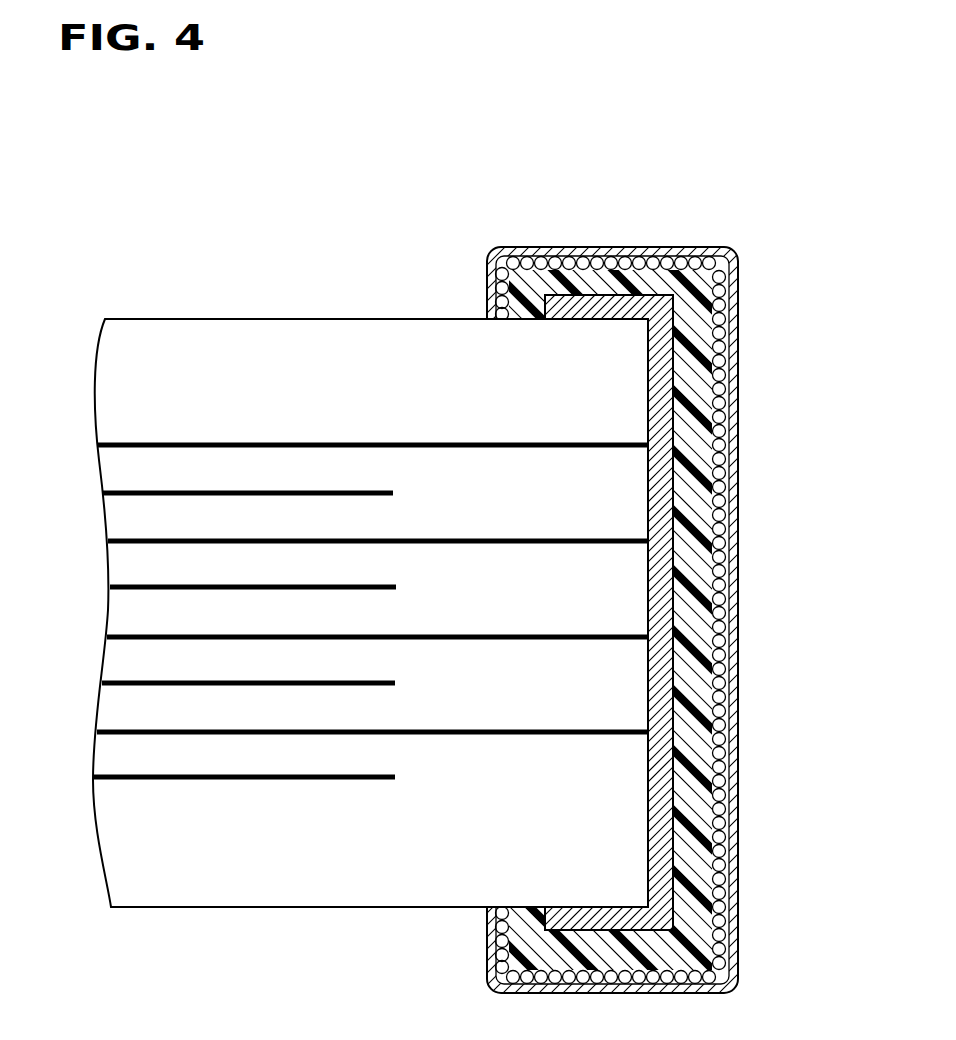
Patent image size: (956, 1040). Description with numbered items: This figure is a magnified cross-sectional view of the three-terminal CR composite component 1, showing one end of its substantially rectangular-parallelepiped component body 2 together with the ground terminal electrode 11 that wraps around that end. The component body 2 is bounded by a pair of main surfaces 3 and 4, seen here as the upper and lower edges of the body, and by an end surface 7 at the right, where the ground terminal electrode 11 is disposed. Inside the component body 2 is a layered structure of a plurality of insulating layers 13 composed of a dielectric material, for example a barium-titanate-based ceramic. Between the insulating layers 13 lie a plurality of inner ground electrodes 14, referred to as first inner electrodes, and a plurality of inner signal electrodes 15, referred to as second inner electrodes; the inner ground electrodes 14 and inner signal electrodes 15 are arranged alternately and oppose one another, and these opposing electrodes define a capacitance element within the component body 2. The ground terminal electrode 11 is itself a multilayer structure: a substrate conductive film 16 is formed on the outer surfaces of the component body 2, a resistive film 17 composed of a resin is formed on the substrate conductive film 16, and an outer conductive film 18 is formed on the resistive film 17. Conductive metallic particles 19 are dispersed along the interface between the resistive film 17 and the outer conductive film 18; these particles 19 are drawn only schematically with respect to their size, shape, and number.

The three-terminal CR composite component 1 is at (58, 170).
The component body 2 is at (100, 312).
The main surface 3 is at (197, 318).
The main surface 4 is at (298, 907).
The end surface 7 is at (650, 510).
The ground terminal electrode 11 is at (748, 260).
The insulating layers 13 is at (289, 517).
The inner ground electrodes 14 is at (424, 540).
The inner signal electrodes 15 is at (243, 683).
The substrate conductive film 16 is at (662, 607).
The resistive film 17 is at (693, 676).
The outer conductive film 18 is at (735, 789).
The conductive metallic particles 19 is at (740, 363).